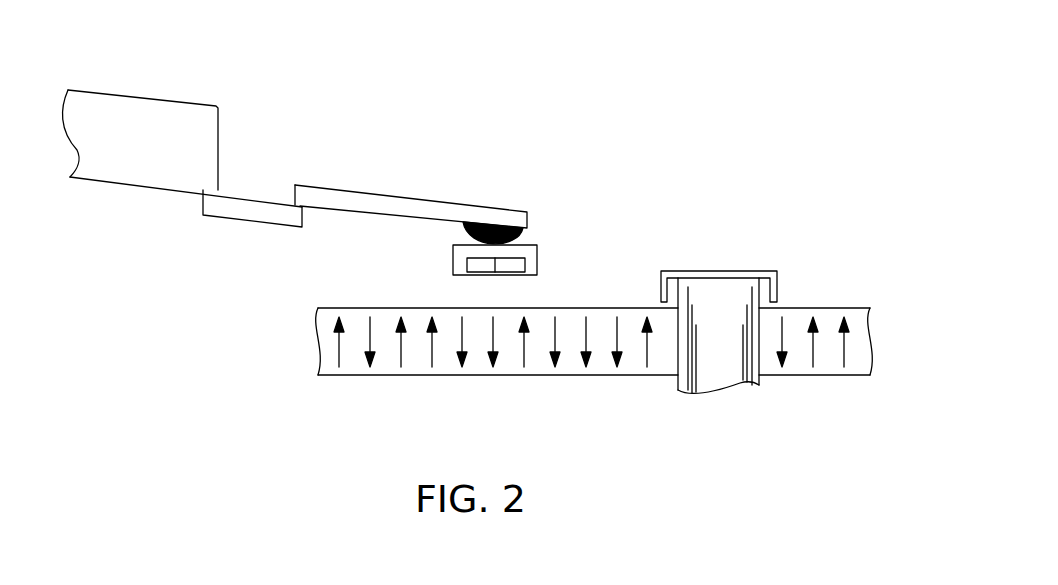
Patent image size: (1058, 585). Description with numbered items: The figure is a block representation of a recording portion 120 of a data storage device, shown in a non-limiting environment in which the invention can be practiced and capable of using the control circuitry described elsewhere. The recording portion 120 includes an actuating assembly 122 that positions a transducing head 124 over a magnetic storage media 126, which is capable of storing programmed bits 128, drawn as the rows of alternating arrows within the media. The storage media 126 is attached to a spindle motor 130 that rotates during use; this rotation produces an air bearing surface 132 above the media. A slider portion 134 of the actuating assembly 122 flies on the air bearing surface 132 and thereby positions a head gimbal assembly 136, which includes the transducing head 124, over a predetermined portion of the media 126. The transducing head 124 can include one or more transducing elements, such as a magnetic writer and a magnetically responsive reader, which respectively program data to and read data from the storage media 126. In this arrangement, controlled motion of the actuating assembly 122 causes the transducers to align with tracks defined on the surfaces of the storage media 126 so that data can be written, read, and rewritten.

The recording portion 120 is at (724, 73).
The actuating assembly 122 is at (318, 93).
The transducing head 124 is at (453, 267).
The magnetic storage media 126 is at (330, 308).
The programmed bits 128 is at (462, 358).
The spindle motor 130 is at (722, 258).
The air bearing surface 132 is at (537, 292).
The slider portion 134 is at (418, 198).
The head gimbal assembly 136 is at (542, 226).